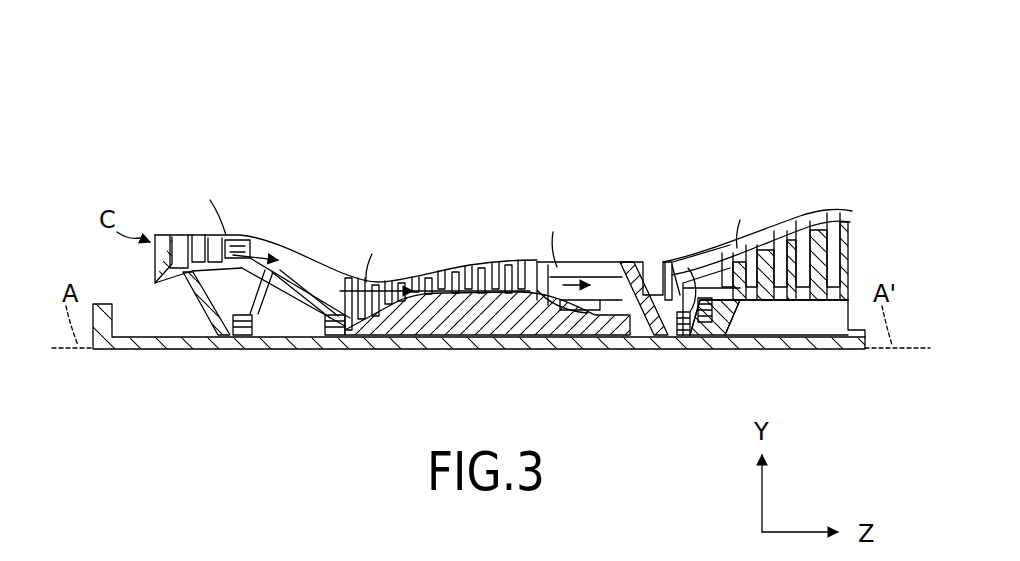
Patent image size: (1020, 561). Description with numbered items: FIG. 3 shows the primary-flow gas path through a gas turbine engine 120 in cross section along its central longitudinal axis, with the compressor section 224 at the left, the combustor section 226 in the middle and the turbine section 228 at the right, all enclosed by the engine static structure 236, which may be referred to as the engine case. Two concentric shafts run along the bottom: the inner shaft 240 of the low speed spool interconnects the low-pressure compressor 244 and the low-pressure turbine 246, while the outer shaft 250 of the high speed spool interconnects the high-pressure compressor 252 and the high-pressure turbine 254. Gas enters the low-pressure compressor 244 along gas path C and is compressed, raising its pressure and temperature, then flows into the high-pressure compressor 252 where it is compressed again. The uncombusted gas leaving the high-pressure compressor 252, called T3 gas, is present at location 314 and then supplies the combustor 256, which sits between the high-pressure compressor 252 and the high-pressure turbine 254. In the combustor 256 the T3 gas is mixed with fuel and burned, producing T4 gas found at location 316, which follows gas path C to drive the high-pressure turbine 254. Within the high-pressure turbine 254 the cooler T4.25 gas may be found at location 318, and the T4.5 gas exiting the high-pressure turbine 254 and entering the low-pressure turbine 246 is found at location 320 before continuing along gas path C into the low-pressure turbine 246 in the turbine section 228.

The gas turbine engine 120 is at (630, 116).
The compressor section 224 is at (530, 170).
The combustor section 226 is at (636, 170).
The turbine section 228 is at (852, 170).
The engine static structure 236 is at (321, 265).
The inner shaft 240 is at (448, 343).
The low pressure compressor 244 is at (241, 236).
The low pressure turbine 246 is at (787, 237).
The outer shaft 250 is at (588, 330).
The high-pressure compressor 252 is at (435, 268).
The high-pressure turbine 254 is at (670, 270).
The combustor 256 is at (583, 270).
The location of T3 gas 314 is at (540, 268).
The location of T4 gas 316 is at (608, 283).
The location of T4.25 gas 318 is at (650, 260).
The location of T4.5 gas 320 is at (713, 252).